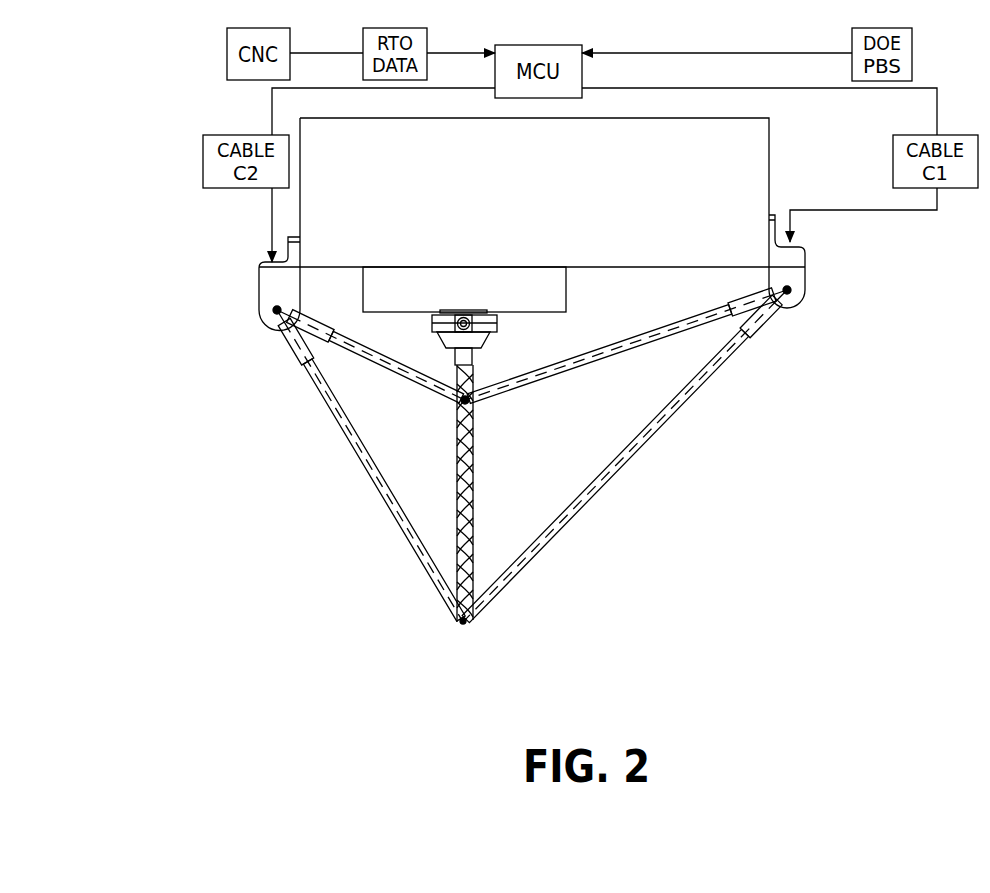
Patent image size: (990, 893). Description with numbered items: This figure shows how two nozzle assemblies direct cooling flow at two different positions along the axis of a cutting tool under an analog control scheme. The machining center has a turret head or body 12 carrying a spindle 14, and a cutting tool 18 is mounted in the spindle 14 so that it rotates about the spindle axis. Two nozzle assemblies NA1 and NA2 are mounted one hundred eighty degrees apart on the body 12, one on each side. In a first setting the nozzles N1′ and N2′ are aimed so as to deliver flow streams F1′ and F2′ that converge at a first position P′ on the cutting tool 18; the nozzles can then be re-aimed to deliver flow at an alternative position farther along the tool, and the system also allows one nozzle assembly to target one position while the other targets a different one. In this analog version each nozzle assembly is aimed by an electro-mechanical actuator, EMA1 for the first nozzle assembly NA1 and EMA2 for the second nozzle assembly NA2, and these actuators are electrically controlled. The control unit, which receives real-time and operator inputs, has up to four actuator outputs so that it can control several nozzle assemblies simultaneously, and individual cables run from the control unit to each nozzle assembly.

The turret head or body 12 is at (771, 188).
The spindle 14 is at (567, 296).
The cutting tool 18 is at (476, 465).
The electro-mechanical actuator EMA2 is at (257, 278).
The electro-mechanical actuator EMA1 is at (808, 254).
The nozzle assembly NA2 is at (258, 316).
The nozzle assembly NA1 is at (808, 275).
The nozzle N2′ is at (292, 318).
The nozzle N1′ is at (752, 297).
The flow stream F2′ is at (414, 384).
The flow stream F1′ is at (552, 380).
The first position P′ is at (470, 396).